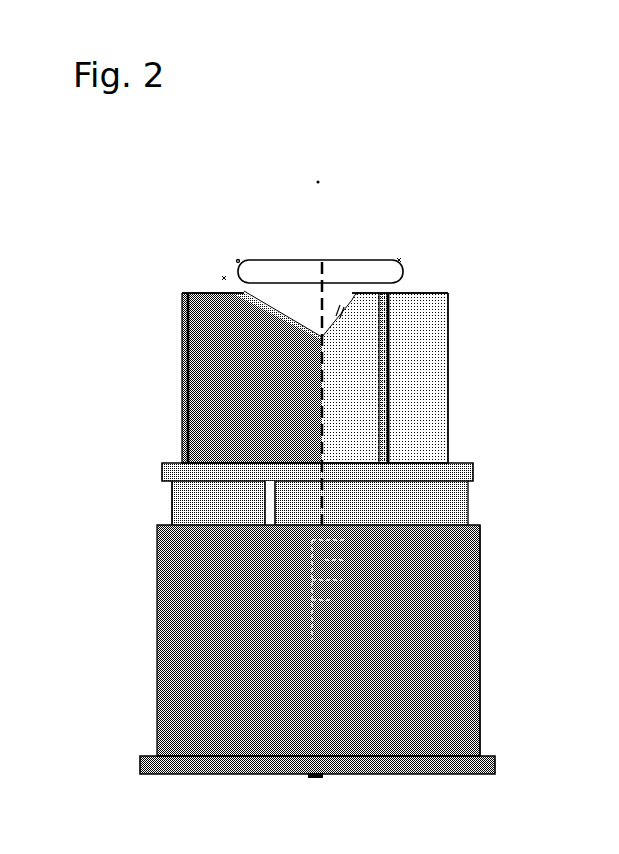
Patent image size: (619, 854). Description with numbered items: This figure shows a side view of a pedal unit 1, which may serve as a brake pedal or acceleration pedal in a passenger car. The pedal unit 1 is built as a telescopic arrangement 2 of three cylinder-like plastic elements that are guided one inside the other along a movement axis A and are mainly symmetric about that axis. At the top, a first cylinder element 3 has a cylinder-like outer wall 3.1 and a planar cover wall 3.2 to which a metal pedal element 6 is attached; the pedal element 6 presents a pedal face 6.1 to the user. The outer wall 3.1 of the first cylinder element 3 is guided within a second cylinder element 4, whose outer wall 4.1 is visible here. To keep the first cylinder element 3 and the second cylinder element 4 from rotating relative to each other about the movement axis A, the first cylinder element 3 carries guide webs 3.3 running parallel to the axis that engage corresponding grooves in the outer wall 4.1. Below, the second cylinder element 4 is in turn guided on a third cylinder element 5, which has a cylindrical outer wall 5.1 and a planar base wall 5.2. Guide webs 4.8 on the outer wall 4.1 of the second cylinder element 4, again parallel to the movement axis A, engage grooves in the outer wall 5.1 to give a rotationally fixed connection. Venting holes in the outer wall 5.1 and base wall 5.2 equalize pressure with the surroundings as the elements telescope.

The pedal unit 1 is at (441, 184).
The telescopic arrangement 2 is at (500, 452).
The first cylinder element 3 is at (431, 361).
The outer wall 3.1 is at (449, 385).
The cover wall 3.2 is at (207, 289).
The guide webs 3.3 is at (181, 359).
The second cylinder element 4 is at (447, 503).
The outer wall 4.1 is at (171, 498).
The guide webs 4.8 is at (262, 509).
The third cylinder element 5 is at (473, 678).
The outer wall 5.1 is at (480, 608).
The base wall 5.2 is at (292, 778).
The pedal element 6 is at (407, 280).
The pedal face 6.1 is at (324, 253).
The movement axis A is at (323, 379).